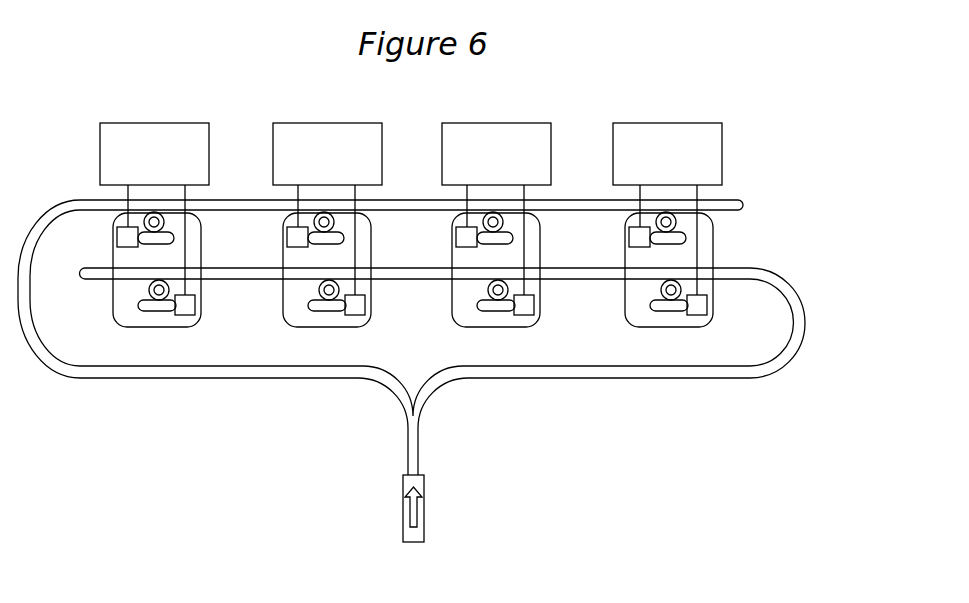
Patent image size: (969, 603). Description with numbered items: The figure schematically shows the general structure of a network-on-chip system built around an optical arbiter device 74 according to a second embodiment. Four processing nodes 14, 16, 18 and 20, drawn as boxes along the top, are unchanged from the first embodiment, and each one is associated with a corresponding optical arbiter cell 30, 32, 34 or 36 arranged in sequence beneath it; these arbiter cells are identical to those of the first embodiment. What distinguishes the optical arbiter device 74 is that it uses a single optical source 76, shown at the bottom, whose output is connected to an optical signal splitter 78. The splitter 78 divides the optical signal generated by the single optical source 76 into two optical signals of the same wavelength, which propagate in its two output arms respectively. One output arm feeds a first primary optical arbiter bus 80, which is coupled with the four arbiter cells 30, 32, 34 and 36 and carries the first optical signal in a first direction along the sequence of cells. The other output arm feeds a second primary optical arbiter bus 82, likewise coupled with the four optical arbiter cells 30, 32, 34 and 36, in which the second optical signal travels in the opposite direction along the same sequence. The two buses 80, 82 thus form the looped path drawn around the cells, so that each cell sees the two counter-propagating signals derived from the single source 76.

The processing node 14 is at (154, 209).
The processing node 16 is at (327, 209).
The processing node 18 is at (496, 209).
The processing node 20 is at (667, 209).
The optical arbiter cell 30 is at (113, 233).
The optical arbiter cell 32 is at (283, 233).
The optical arbiter cell 34 is at (452, 233).
The optical arbiter cell 36 is at (625, 233).
The optical arbiter device 74 is at (810, 195).
The single optical source 76 is at (424, 495).
The optical signal splitter 78 is at (401, 411).
The first primary optical arbiter bus 80 is at (729, 199).
The second primary optical arbiter bus 82 is at (742, 266).